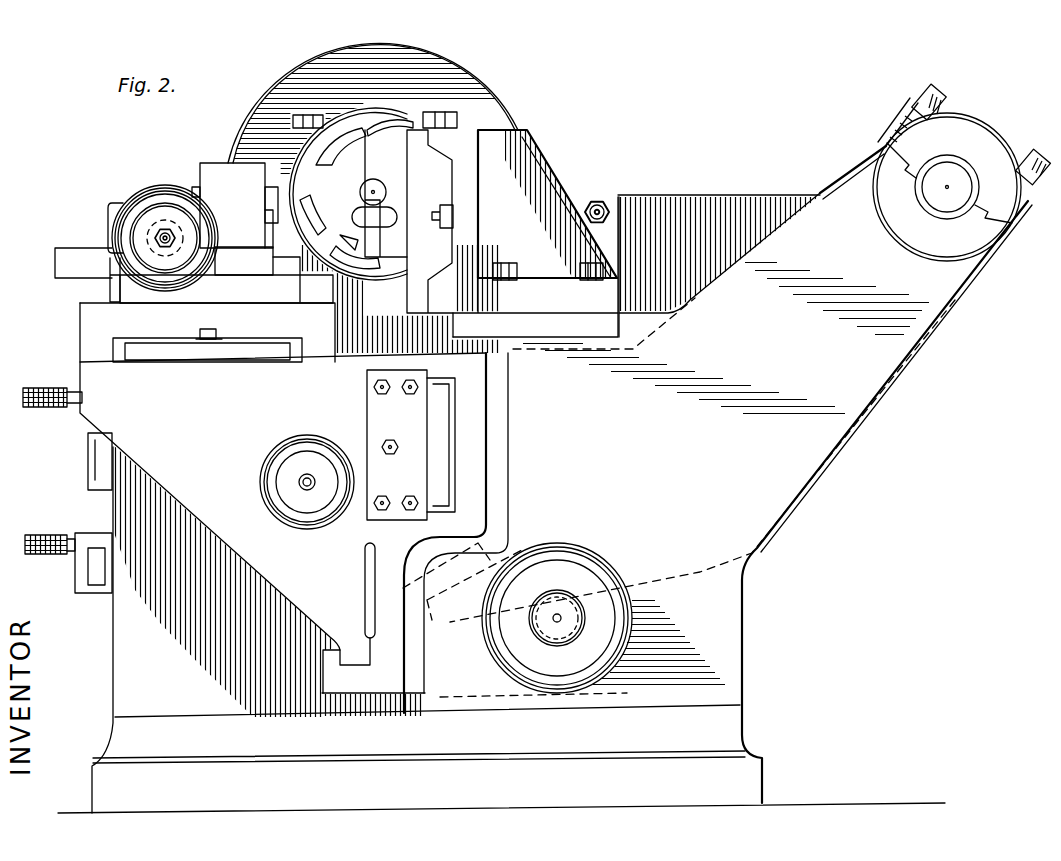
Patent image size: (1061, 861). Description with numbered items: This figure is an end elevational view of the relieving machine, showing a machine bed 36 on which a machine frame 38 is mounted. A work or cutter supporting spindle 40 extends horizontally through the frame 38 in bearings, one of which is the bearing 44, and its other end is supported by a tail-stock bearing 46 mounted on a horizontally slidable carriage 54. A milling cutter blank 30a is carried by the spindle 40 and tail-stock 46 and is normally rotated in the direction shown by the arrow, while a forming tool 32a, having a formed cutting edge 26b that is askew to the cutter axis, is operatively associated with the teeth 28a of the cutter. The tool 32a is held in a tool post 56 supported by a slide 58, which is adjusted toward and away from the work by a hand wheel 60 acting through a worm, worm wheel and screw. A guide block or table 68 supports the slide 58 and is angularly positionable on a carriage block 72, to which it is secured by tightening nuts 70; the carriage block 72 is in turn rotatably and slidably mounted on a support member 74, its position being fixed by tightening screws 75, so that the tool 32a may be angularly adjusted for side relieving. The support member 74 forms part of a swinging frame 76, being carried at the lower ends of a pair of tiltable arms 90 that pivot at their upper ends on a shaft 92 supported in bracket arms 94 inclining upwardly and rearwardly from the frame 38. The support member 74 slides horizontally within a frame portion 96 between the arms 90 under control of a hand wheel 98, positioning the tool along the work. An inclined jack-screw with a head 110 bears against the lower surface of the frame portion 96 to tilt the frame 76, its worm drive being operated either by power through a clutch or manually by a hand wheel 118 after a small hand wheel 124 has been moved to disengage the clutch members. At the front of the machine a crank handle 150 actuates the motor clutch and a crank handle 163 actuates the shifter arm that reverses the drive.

The cutter blade 26b is at (345, 172).
The teeth 28a is at (373, 278).
The milling cutter blank 30a is at (335, 172).
The forming tool 32a is at (278, 205).
The machine bed 36 is at (720, 730).
The machine frame 38 is at (723, 637).
The work or cutter supporting spindle 40 is at (386, 192).
The bearing 44 is at (357, 117).
The tail-stock bearing 46 is at (393, 150).
The carriage 54 is at (417, 176).
The tool post 56 is at (205, 170).
The slide 58 is at (68, 250).
The hand wheel 60 is at (148, 202).
The guide block or table 68 is at (133, 293).
The tightening nuts 70 is at (215, 273).
The carriage block 72 is at (100, 327).
The support member 74 is at (97, 378).
The tightening screws 75 is at (210, 332).
The swinging frame 76 is at (247, 582).
The swinging or tiltable arms 90 is at (735, 267).
The shaft 92 is at (953, 200).
The bracket arms 94 is at (825, 462).
The frame portion 96 is at (467, 447).
The hand wheel 98 is at (297, 520).
The head 110 is at (503, 557).
The hand wheel 118 is at (565, 598).
The small hand wheel 124 is at (583, 605).
The crank handle 150 is at (50, 557).
The crank handle 163 is at (42, 408).